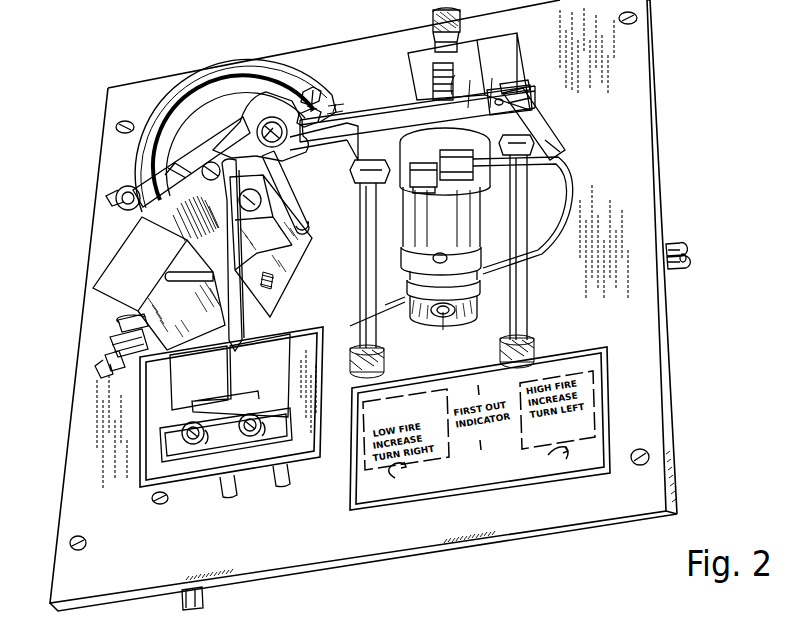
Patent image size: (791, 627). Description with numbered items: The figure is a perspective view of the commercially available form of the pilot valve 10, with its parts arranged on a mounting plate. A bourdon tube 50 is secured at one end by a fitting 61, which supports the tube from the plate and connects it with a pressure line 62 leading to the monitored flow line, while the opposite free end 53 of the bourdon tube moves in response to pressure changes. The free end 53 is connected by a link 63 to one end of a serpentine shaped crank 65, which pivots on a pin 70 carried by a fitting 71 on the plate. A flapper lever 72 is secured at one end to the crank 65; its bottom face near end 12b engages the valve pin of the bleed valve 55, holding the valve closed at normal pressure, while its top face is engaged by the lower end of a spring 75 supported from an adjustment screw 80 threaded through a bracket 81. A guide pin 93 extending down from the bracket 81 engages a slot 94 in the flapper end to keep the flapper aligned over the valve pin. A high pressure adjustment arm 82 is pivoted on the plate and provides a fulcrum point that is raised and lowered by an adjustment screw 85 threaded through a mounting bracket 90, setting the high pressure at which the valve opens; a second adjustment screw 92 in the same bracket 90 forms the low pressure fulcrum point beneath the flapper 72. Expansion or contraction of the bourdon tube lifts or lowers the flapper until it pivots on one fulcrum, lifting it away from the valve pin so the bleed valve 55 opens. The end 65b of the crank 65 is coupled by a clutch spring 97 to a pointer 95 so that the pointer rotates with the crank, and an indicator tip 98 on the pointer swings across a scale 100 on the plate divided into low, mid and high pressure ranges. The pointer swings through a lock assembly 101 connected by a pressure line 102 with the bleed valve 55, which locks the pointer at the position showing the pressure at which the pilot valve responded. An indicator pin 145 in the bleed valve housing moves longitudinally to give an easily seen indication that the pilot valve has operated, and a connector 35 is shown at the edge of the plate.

The pilot valve 10 is at (66, 138).
The electrical connector 35 is at (676, 246).
The bourdon tube 50 is at (173, 97).
The free end of bourdon tube 53 is at (306, 80).
The bleed valve 55 is at (445, 227).
The fitting 61 is at (290, 250).
The pressure line 62 is at (204, 598).
The link 63 is at (336, 100).
The serpentine shaped crank 65 is at (227, 62).
The end of crank 65b is at (196, 158).
The pin 70 is at (260, 133).
The fitting 71 is at (300, 193).
The flapper lever 72 is at (384, 118).
The pin 12b is at (471, 87).
The spring 75 is at (412, 83).
The adjustment screw 80 is at (430, 15).
The bracket 81 is at (493, 60).
The high pressure adjustment arm 82 is at (545, 118).
The adjustment screw 85 is at (528, 322).
The mounting bracket 90 is at (572, 169).
The adjustment screw 92 is at (360, 241).
The guide pin 93 is at (500, 93).
The slot 94 is at (525, 93).
The pointer 95 is at (209, 184).
The clutch spring 97 is at (110, 200).
The indicator tip 98 is at (227, 323).
The scale 100 is at (302, 468).
The lock assembly 101 is at (104, 282).
The pressure line 102 is at (547, 248).
The indicator pin 145 is at (434, 310).